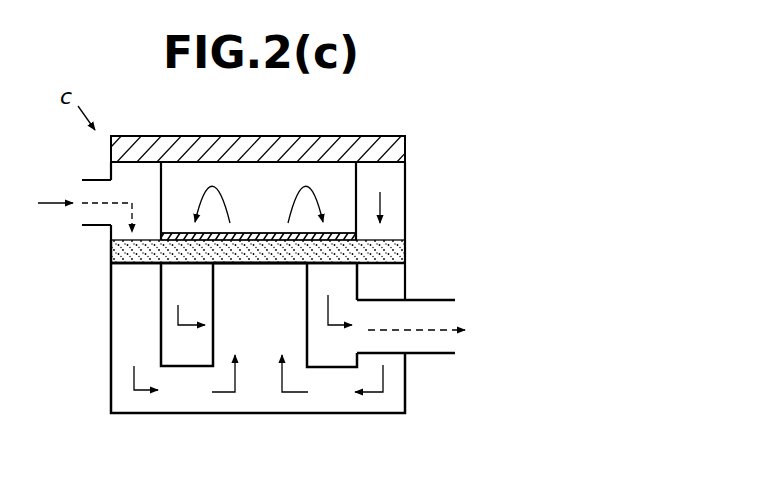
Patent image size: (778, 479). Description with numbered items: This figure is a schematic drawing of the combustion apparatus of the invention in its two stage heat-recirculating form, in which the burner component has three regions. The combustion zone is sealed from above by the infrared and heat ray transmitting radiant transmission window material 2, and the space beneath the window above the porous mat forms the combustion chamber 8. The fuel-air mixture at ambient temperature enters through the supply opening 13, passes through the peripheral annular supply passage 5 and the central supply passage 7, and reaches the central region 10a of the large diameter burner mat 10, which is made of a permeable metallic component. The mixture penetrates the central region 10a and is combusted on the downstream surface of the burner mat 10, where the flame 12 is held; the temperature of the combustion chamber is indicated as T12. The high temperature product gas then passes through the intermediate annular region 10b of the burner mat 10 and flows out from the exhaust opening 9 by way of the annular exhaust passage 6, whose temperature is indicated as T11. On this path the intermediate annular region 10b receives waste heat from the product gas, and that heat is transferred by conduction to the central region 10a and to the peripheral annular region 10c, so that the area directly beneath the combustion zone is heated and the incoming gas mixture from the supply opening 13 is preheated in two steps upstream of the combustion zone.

The radiant transmission window material 2 is at (347, 148).
The combustion chamber 8 is at (225, 162).
The flame 12 is at (267, 233).
The temperature of upper region T12 is at (247, 233).
The burner mat 10 is at (406, 251).
The central region 10a is at (257, 263).
The intermediate annular region 10b is at (175, 263).
The peripheral annular region 10c is at (150, 263).
The supply opening 13 is at (76, 216).
The peripheral annular supply passage 5 is at (118, 332).
The annular exhaust passage 6 is at (170, 349).
The central supply passage 7 is at (258, 348).
The temperature of lower region T11 is at (275, 266).
The exhaust opening 9 is at (427, 342).